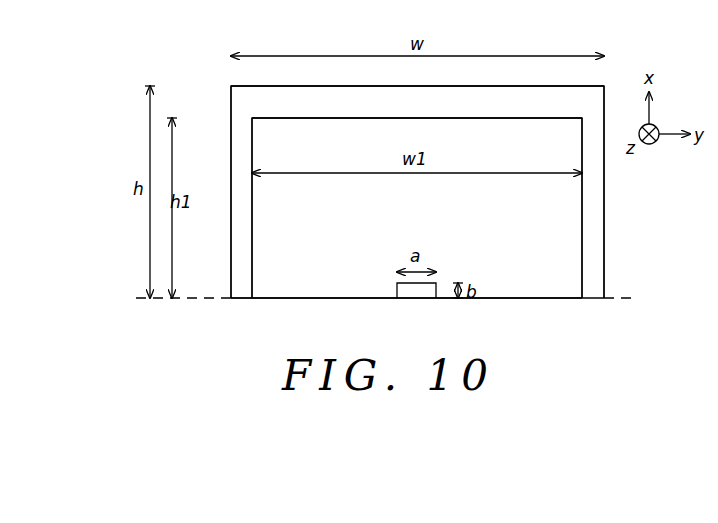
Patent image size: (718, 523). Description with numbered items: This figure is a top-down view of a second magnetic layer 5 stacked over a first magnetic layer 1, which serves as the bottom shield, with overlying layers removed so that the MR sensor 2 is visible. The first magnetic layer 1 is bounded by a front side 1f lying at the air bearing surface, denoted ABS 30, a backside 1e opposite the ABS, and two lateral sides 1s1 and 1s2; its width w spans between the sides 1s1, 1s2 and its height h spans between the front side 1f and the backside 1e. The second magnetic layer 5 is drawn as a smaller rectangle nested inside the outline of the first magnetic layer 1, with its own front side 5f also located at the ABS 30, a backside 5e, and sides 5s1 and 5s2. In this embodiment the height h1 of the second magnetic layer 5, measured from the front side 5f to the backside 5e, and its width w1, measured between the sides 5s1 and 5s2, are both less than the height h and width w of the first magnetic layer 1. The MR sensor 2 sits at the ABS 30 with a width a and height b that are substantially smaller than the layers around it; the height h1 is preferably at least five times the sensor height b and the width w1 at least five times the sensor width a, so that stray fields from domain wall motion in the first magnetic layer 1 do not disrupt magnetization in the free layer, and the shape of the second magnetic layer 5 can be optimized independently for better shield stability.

The first magnetic layer 1 is at (398, 103).
The backside of first magnetic layer 1e is at (445, 88).
The side of first magnetic layer 1s1 is at (605, 180).
The side of first magnetic layer 1s2 is at (231, 168).
The front side of first magnetic layer 1f is at (512, 300).
The second magnetic layer 5 is at (505, 137).
The backside of second magnetic layer 5e is at (328, 118).
The side of second magnetic layer 5s1 is at (582, 236).
The side of second magnetic layer 5s2 is at (252, 230).
The front side of second magnetic layer 5f is at (335, 299).
The MR sensor 2 is at (425, 295).
The ABS 30 is at (383, 299).